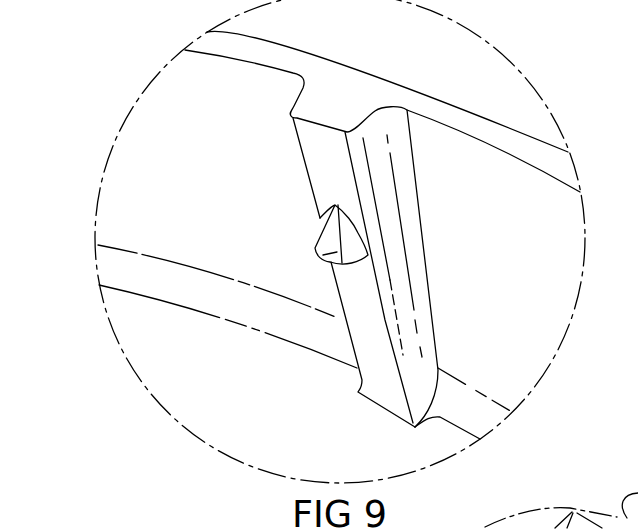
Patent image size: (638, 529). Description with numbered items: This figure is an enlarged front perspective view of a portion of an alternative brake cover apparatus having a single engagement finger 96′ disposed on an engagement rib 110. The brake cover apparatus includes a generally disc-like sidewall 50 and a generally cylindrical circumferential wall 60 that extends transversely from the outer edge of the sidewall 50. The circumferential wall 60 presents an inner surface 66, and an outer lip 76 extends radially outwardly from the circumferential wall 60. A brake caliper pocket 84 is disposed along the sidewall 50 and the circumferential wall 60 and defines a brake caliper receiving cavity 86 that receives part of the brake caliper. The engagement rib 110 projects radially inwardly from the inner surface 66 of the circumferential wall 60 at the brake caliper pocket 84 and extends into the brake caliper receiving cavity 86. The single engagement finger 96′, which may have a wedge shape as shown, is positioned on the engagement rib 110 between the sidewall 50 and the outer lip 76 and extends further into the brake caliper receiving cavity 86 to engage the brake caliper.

The sidewall 50 is at (243, 430).
The circumferential wall 60 is at (548, 222).
The inner surface 66 is at (521, 266).
The outer lip 76 is at (500, 132).
The brake caliper pocket 84 is at (106, 160).
The brake caliper receiving cavity 86 is at (189, 328).
The single engagement finger 96′ is at (325, 264).
The engagement rib 110 is at (335, 103).